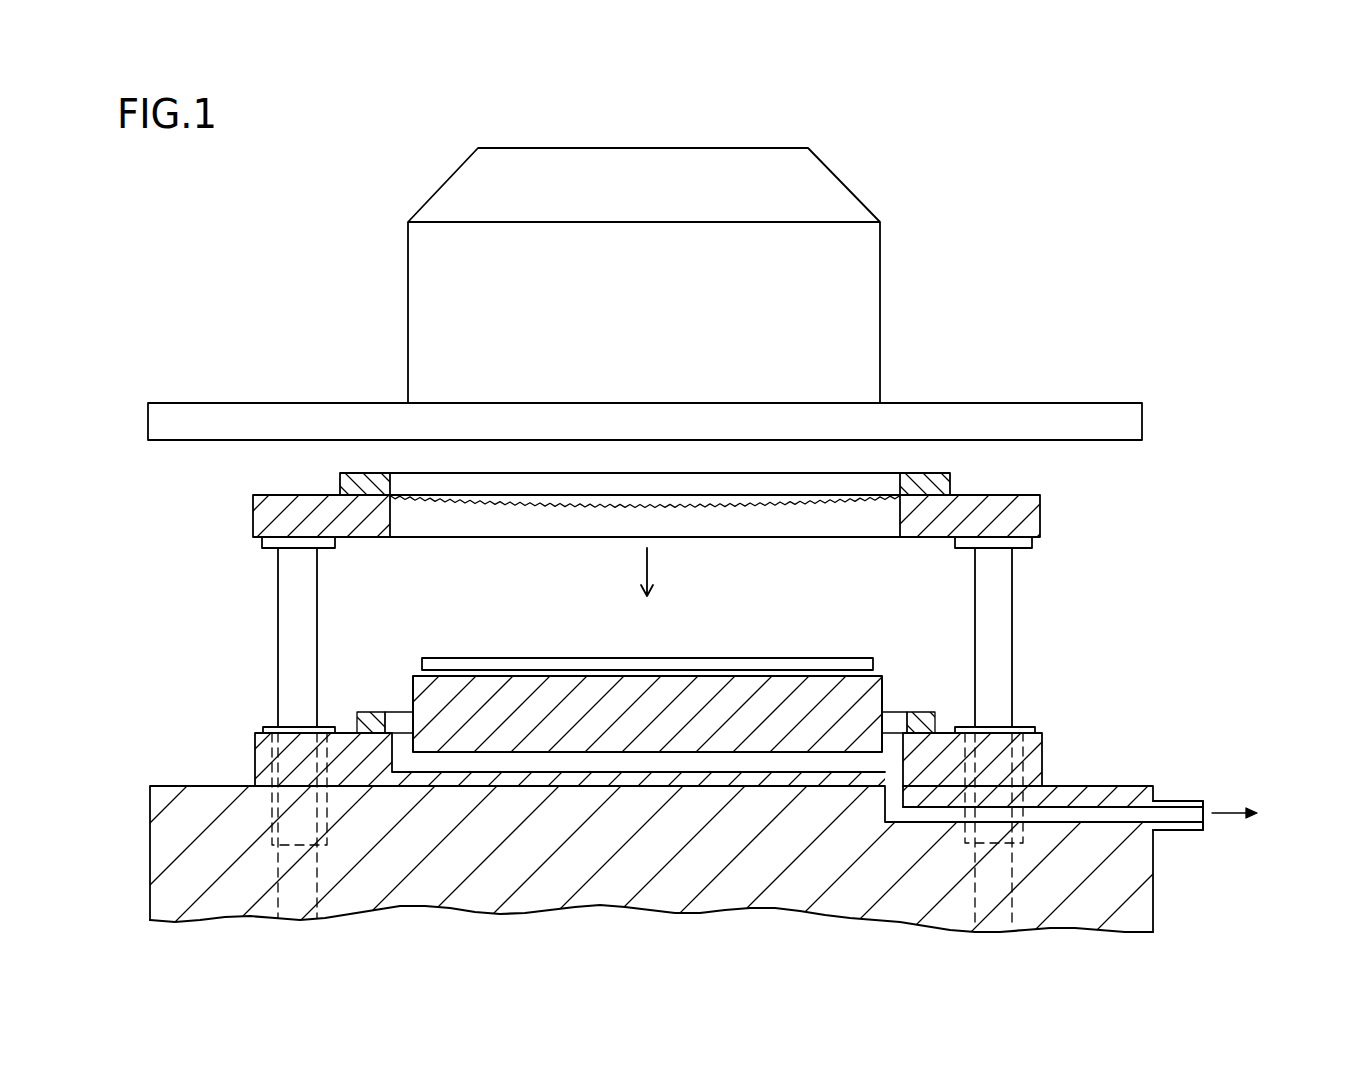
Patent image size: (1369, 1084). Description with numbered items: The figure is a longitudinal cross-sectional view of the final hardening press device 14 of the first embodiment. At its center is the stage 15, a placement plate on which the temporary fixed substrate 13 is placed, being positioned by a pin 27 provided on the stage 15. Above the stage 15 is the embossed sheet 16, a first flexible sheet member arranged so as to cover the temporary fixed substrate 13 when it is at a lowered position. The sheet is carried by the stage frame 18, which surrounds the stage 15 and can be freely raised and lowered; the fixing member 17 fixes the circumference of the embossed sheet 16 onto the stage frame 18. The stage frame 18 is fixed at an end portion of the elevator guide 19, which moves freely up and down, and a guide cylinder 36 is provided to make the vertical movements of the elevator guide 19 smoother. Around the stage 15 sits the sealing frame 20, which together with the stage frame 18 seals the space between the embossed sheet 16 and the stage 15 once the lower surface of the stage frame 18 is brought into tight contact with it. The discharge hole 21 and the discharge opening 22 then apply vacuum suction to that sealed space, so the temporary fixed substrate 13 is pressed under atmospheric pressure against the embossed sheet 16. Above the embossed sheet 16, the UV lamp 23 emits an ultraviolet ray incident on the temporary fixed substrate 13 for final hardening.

The temporary fixed substrate 13 is at (770, 658).
The final hardening press device 14 is at (645, 273).
The stage 15 is at (587, 676).
The embossed sheet 16 is at (724, 495).
The fixing member 17 is at (338, 482).
The stage frame 18 is at (275, 512).
The elevator guide 19 is at (300, 673).
The sealing frame 20 is at (305, 713).
The discharge hole 21 is at (893, 730).
The discharge opening 22 is at (1173, 832).
The UV lamp 23 is at (634, 265).
The pin 27 is at (413, 672).
The guide cylinder 36 is at (1027, 726).